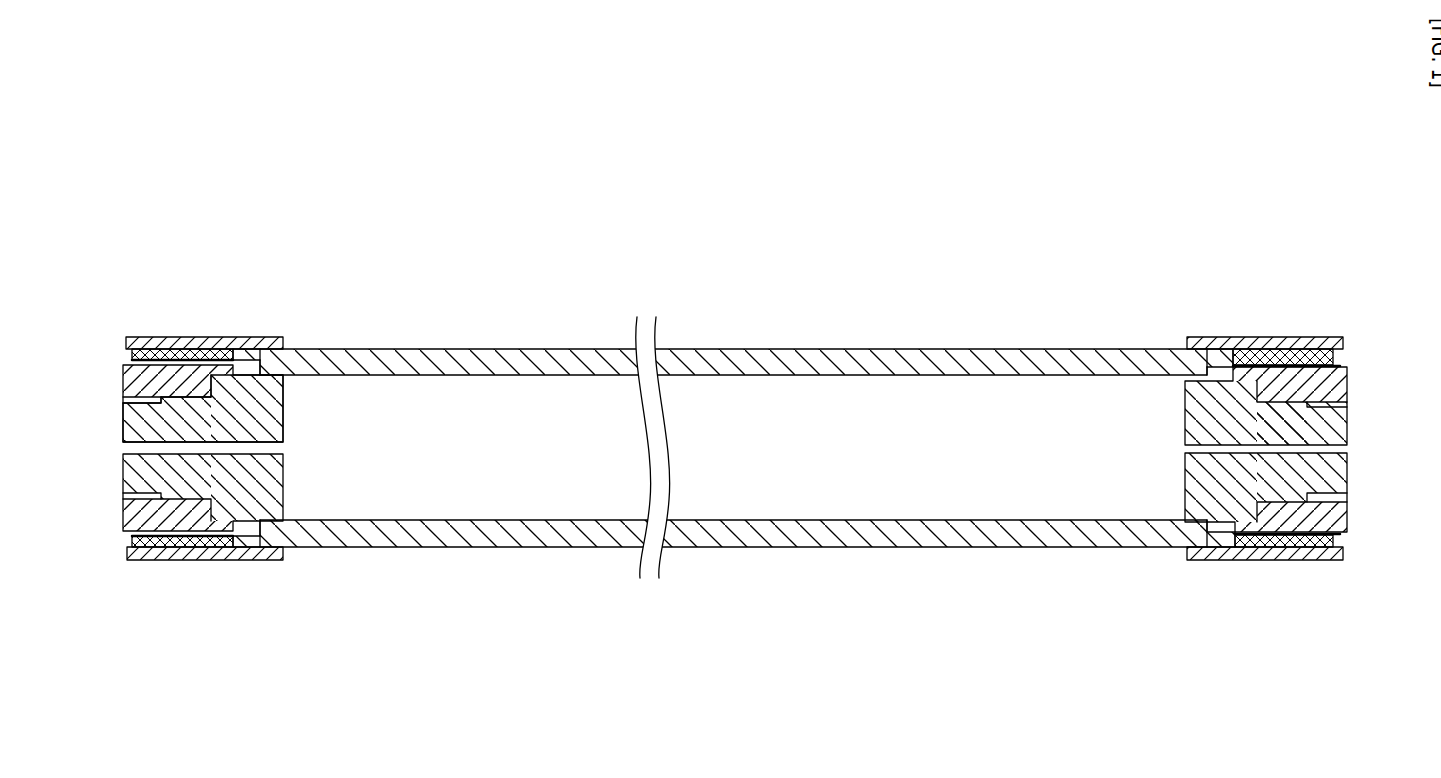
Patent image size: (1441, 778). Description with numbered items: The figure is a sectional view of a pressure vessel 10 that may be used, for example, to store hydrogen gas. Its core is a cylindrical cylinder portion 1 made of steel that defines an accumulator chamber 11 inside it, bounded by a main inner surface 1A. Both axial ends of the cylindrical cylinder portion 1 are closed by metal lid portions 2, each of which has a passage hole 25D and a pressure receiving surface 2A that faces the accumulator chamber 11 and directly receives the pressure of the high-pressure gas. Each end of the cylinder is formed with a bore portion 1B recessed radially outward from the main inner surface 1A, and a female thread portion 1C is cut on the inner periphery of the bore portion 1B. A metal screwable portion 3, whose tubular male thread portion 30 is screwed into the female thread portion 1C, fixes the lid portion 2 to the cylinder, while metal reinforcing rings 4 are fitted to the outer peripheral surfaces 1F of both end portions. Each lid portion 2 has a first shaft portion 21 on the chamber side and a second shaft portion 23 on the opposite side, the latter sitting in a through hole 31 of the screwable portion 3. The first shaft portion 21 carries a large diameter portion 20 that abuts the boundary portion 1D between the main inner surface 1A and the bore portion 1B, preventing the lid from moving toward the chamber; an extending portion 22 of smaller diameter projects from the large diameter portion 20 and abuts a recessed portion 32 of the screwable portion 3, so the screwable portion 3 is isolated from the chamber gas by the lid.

The cylindrical cylinder portion 1 is at (715, 548).
The main inner surface 1A is at (840, 515).
The bore portion 1B is at (243, 358).
The female thread portion 1C is at (165, 546).
The boundary portion 1D is at (290, 372).
The outer peripheral surface 1F is at (370, 349).
The lid portion 2 is at (285, 408).
The pressure receiving surface 2A is at (284, 482).
The screwable portion 3 is at (195, 362).
The reinforcing ring 4 is at (268, 357).
The pressure vessel 10 is at (765, 772).
The accumulator chamber 11 is at (757, 463).
The large diameter portion 20 is at (253, 540).
The first shaft portion 21 is at (270, 533).
The extending portion 22 is at (217, 360).
The second shaft portion 23 is at (190, 528).
The passage hole 25D is at (125, 446).
The male thread portion 30 is at (152, 360).
The through hole 31 is at (1343, 487).
The recessed portion 32 is at (1255, 548).